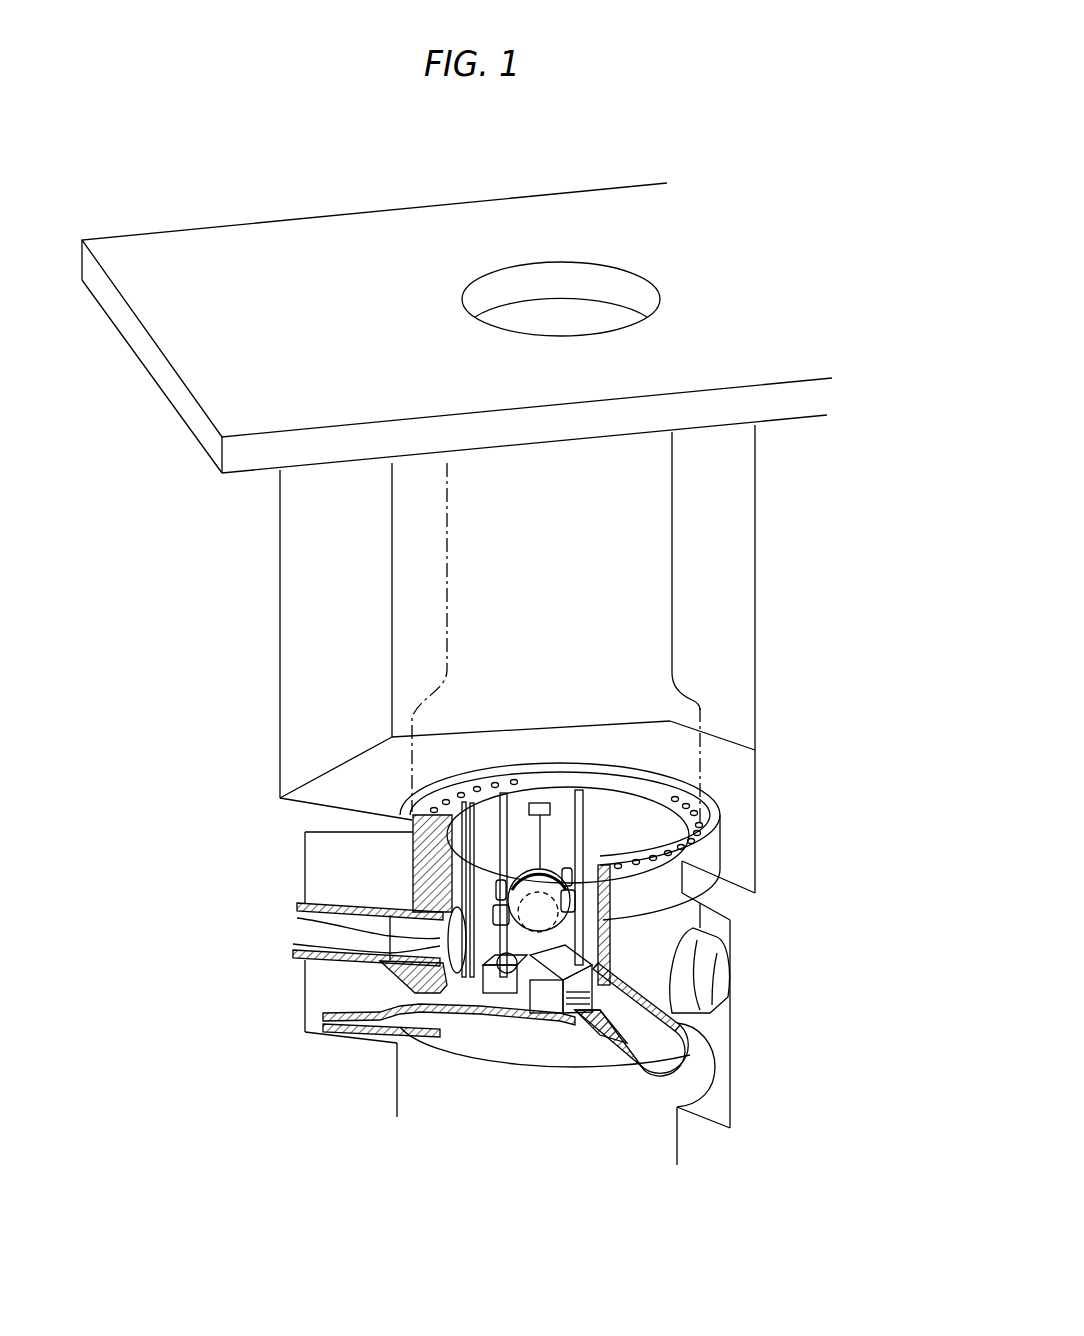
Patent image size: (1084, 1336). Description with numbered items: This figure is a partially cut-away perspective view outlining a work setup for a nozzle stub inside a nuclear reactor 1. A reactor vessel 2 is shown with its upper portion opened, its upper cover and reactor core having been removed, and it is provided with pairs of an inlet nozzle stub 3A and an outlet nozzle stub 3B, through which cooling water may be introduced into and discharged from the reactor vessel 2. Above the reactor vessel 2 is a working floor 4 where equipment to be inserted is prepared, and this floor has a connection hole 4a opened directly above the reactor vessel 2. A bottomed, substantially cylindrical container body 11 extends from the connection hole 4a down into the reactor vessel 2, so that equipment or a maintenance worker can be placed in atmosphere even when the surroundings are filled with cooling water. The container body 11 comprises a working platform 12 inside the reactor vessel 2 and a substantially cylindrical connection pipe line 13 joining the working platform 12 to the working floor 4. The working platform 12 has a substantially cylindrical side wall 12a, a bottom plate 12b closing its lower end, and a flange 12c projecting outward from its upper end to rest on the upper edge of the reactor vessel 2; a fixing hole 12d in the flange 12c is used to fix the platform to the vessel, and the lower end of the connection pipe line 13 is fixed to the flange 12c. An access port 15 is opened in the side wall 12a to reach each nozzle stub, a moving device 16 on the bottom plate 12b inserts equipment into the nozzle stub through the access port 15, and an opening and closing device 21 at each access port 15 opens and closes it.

The nuclear reactor 1 is at (258, 613).
The reactor vessel 2 is at (408, 870).
The inlet nozzle stub 3A is at (425, 992).
The outlet nozzle stub 3B is at (457, 1020).
The working floor 4 is at (255, 245).
The connection hole 4a is at (525, 283).
The container body 11 is at (688, 602).
The working platform 12 is at (640, 788).
The side wall 12a is at (643, 818).
The bottom plate 12b is at (490, 1022).
The flange 12c is at (632, 792).
The fixing hole 12d is at (748, 873).
The connection pipe line 13 is at (672, 551).
The access port 15 is at (523, 858).
The moving device 16 is at (563, 1030).
The opening and closing device 21 is at (472, 915).